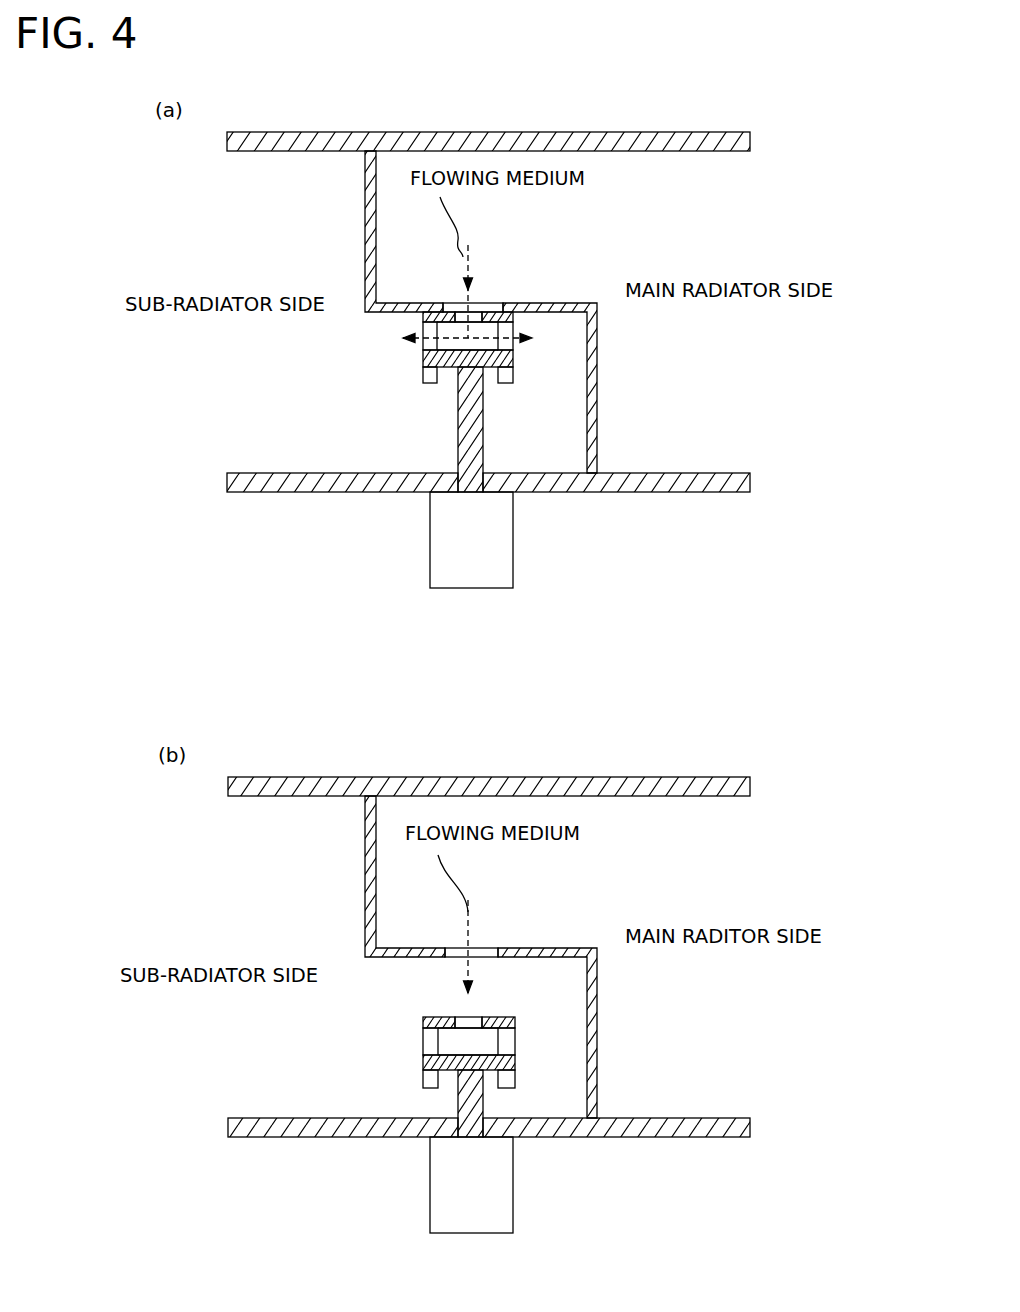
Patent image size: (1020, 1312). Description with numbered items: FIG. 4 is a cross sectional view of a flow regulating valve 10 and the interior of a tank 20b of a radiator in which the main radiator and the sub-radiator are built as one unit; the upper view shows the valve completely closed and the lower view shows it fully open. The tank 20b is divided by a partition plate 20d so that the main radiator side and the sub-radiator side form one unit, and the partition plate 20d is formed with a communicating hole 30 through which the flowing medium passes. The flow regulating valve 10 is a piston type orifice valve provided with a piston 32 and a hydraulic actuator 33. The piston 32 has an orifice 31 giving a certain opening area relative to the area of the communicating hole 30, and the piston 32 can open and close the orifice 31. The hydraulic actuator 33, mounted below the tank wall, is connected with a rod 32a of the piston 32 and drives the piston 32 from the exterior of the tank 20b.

The flow regulating valve 10 is at (470, 713).
The tank 20b is at (345, 498).
The partition plate 20d is at (542, 303).
The communicating hole 30 is at (467, 628).
The orifice 31 is at (463, 310).
The piston 32 is at (530, 362).
The rod 32a is at (483, 462).
The hydraulic actuator 33 is at (520, 558).